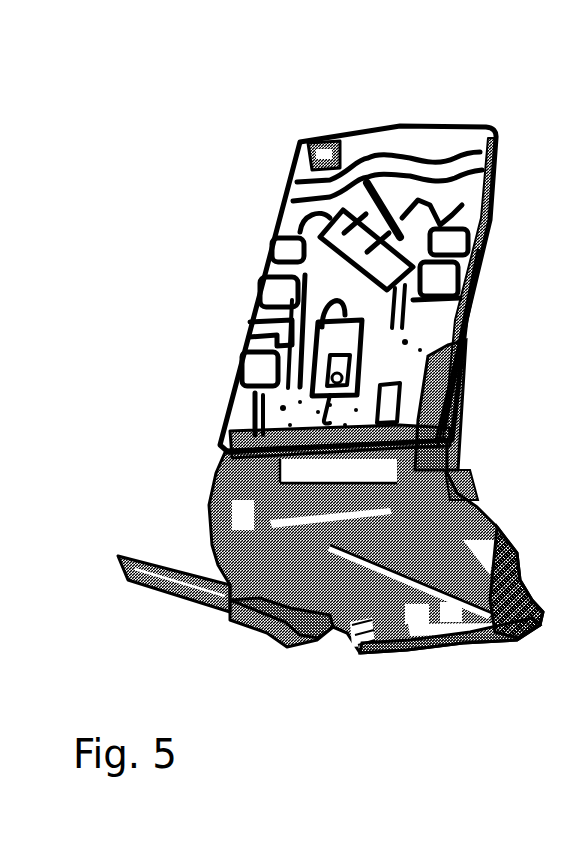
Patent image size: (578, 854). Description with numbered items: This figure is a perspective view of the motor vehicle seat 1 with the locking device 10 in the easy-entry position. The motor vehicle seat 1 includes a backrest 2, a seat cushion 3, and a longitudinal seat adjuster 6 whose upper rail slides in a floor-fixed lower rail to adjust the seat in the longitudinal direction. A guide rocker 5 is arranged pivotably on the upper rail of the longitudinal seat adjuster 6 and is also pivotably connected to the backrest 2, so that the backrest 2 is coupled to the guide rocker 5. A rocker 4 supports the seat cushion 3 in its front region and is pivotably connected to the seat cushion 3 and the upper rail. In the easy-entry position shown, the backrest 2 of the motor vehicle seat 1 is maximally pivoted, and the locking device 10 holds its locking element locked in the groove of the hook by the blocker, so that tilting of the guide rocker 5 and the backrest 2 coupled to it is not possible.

The motor vehicle seat 1 is at (312, 384).
The backrest 2 is at (270, 260).
The seat cushion 3 is at (498, 527).
The rocker 4 is at (507, 555).
The guide rocker 5 is at (461, 488).
The longitudinal seat adjuster 6 is at (120, 568).
The locking device 10 is at (343, 625).